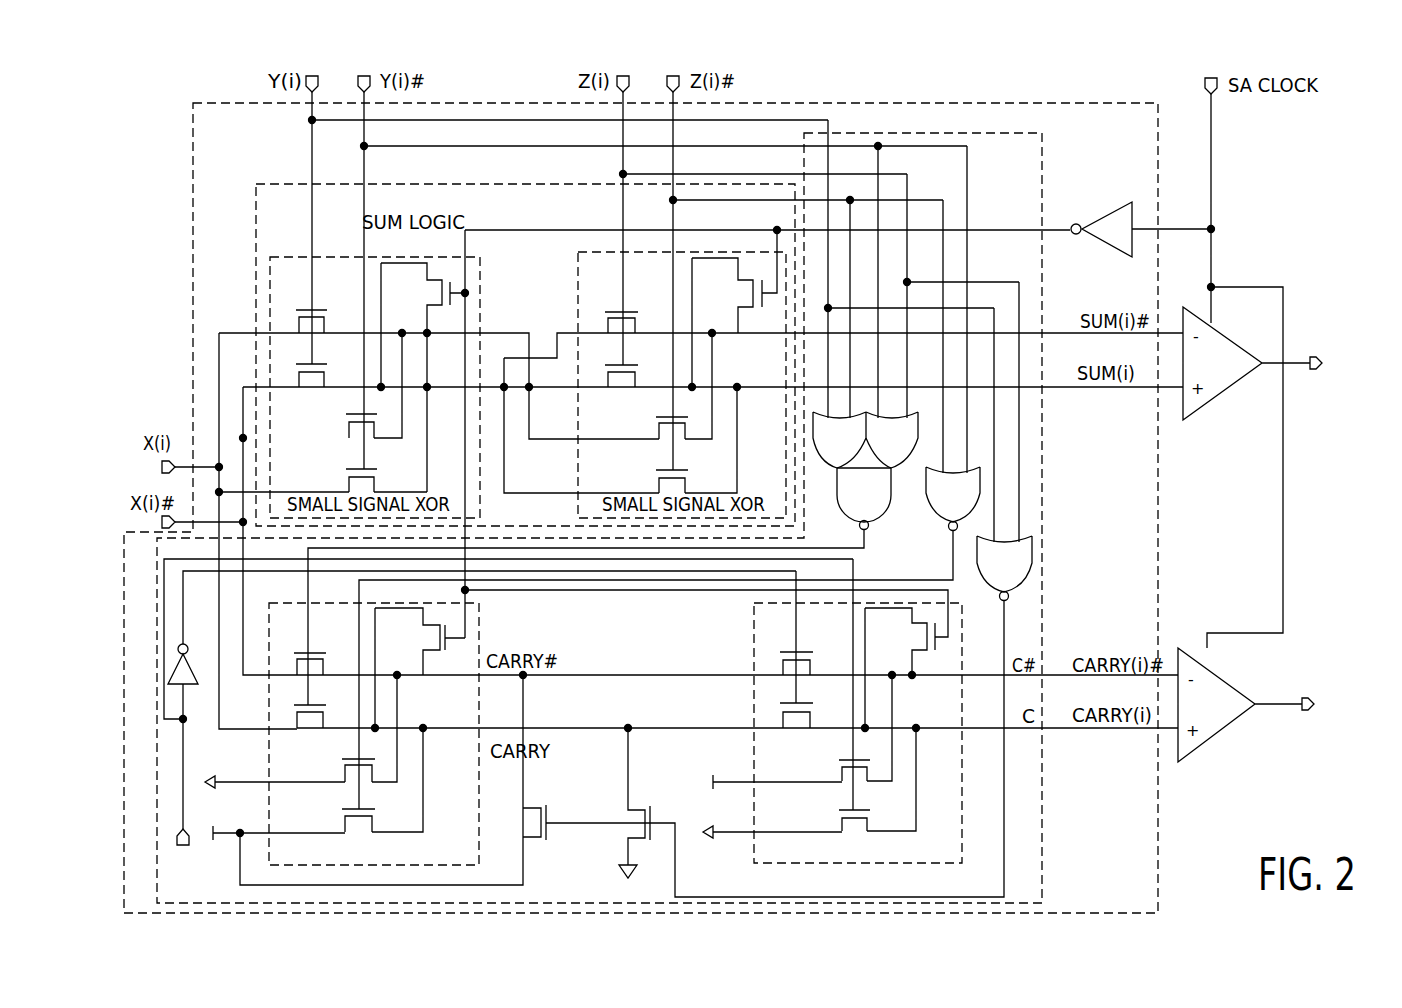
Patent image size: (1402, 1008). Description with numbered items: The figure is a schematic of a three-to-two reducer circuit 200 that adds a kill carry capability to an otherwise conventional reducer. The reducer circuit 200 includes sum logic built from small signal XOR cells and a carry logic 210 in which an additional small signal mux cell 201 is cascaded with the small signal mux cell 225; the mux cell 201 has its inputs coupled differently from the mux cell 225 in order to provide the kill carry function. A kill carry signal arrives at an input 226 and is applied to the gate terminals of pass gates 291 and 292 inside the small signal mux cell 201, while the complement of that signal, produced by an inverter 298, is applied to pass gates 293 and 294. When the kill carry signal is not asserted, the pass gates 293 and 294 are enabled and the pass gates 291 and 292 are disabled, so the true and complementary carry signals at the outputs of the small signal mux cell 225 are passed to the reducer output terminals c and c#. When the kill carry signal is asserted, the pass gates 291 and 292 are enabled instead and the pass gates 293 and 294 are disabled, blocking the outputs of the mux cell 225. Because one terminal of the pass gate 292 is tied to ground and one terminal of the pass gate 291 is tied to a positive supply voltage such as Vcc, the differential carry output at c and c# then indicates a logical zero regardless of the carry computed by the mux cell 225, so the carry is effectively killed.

The 3 to 2 reducer circuit 200 is at (1127, 889).
The carry logic 210 is at (1023, 214).
The small signal mux cell 225 is at (477, 862).
The small signal mux cell 201 is at (832, 733).
The pass gate 291 is at (840, 776).
The pass gate 292 is at (809, 783).
The pass gate 293 is at (806, 671).
The pass gate 294 is at (806, 722).
The inverter 298 is at (188, 668).
The input 226 is at (185, 849).